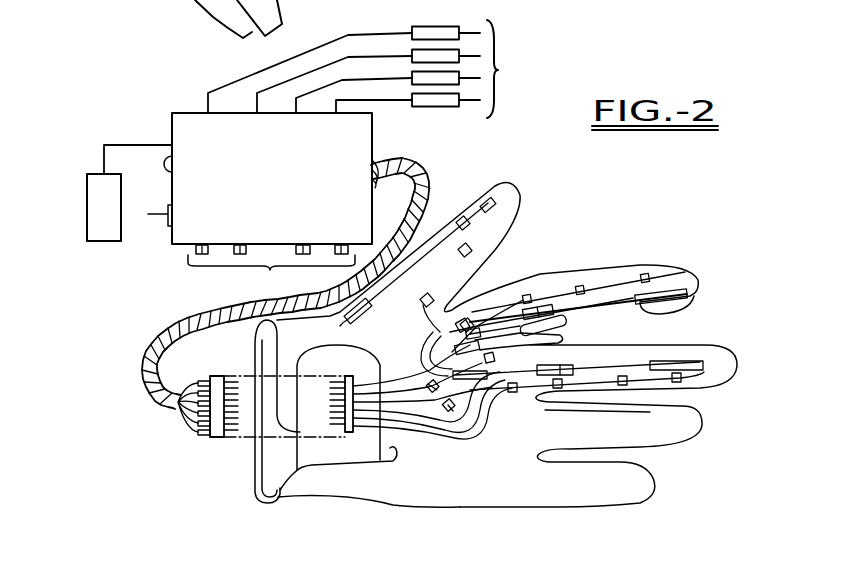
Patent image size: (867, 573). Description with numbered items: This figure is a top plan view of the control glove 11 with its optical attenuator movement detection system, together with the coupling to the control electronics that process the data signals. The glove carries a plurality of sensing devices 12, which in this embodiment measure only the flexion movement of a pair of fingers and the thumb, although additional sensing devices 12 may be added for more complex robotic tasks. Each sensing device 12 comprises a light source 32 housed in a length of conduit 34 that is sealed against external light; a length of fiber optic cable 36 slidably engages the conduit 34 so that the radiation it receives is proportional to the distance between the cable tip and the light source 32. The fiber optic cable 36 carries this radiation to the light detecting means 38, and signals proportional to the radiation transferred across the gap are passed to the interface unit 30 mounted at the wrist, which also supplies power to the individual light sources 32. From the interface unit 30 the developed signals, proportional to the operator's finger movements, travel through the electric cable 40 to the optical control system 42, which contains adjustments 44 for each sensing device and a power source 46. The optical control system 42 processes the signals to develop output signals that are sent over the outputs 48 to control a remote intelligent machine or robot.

The control glove 11 is at (509, 513).
The sensing device 12 is at (640, 355).
The interface unit 30 is at (345, 437).
The light source 32 is at (704, 290).
The conduit 34 is at (645, 298).
The fiber optic cable 36 is at (603, 303).
The light detecting means 38 is at (541, 300).
The electric cable 40 is at (148, 356).
The optical control system 42 is at (282, 195).
The adjustments 44 is at (271, 270).
The power source 46 is at (87, 207).
The outputs 48 is at (470, 69).